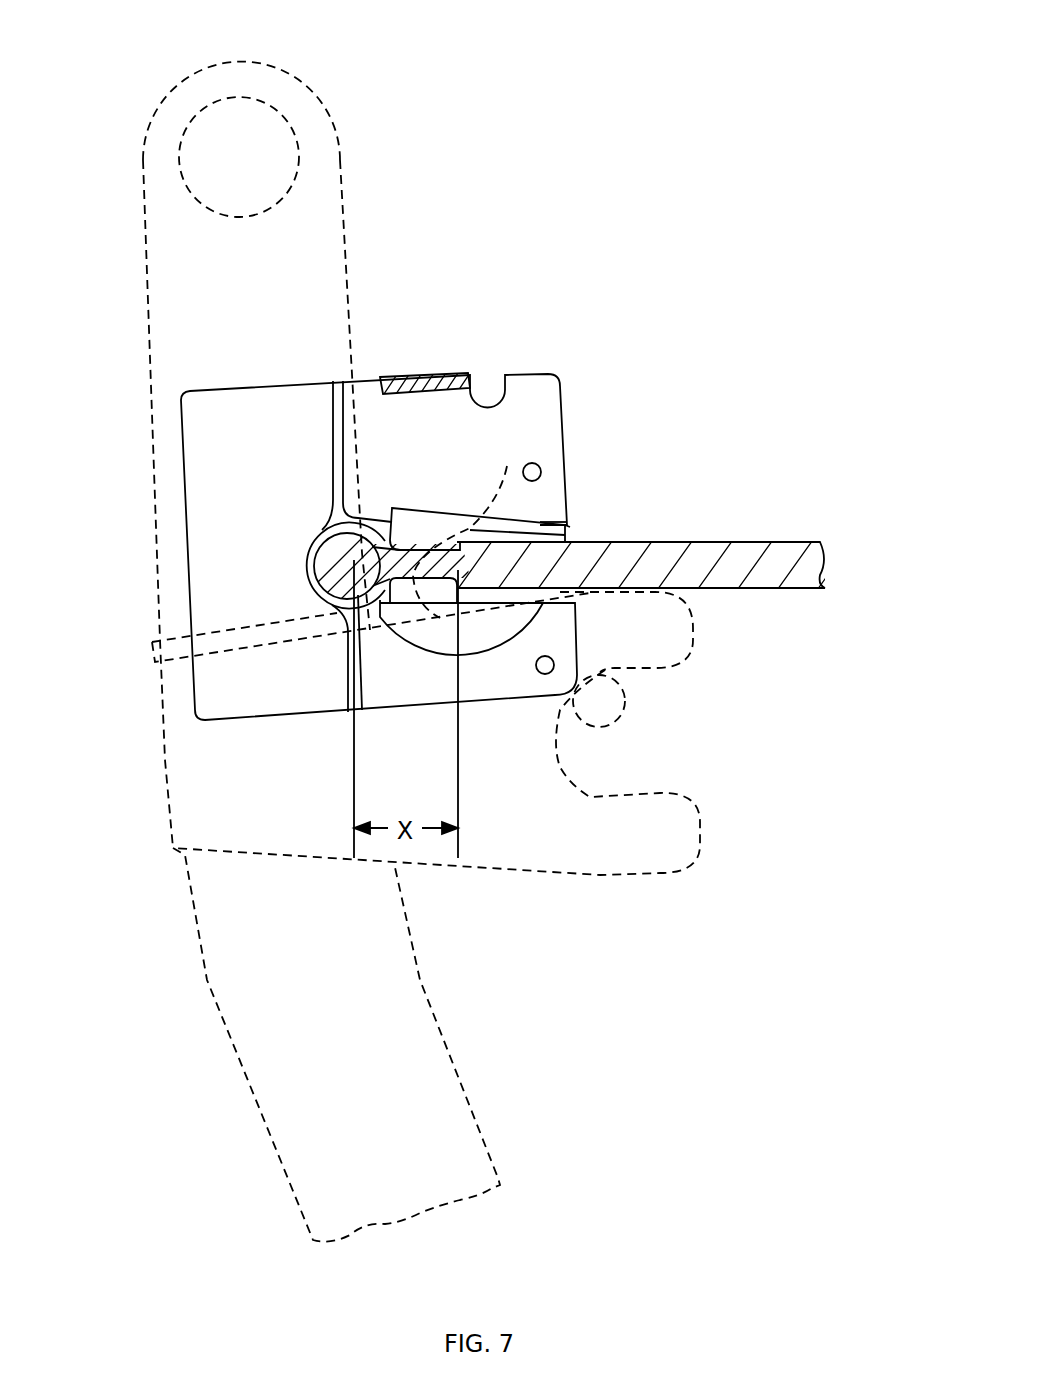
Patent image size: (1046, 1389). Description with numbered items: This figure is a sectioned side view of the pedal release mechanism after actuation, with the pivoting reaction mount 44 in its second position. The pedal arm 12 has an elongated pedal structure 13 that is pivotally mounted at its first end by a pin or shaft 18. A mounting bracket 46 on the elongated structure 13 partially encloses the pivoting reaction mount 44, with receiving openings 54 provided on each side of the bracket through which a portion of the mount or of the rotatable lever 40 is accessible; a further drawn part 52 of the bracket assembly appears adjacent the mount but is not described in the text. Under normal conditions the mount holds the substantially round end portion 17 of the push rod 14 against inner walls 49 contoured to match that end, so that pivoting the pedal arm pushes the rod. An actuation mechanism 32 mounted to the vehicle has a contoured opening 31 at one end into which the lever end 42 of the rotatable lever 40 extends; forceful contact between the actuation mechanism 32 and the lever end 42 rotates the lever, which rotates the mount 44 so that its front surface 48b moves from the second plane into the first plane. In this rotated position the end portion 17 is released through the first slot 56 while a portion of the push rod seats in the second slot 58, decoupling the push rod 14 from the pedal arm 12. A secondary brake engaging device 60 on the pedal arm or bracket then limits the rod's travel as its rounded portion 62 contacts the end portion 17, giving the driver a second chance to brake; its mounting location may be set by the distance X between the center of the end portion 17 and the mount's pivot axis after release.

The pedal arm 12 is at (310, 220).
The elongated pedal structure 13 is at (222, 905).
The push rod 14 is at (745, 552).
The end portion 17 is at (330, 573).
The pin or shaft 18 is at (243, 97).
The opening 31 is at (592, 800).
The actuation mechanism 32 is at (198, 807).
The rotatable lever 40 is at (477, 529).
The lever end 42 is at (625, 705).
The pivoting reaction mount 44 is at (578, 534).
The mounting bracket 46 is at (527, 365).
The front surface 48b is at (416, 498).
The inner walls 49 is at (440, 598).
The lower plate 52 is at (512, 655).
The receiving openings 54 is at (556, 505).
The first slot 56 is at (357, 507).
The second slot 58 is at (572, 526).
The secondary brake engaging device 60 is at (332, 415).
The rounded portion 62 is at (307, 563).